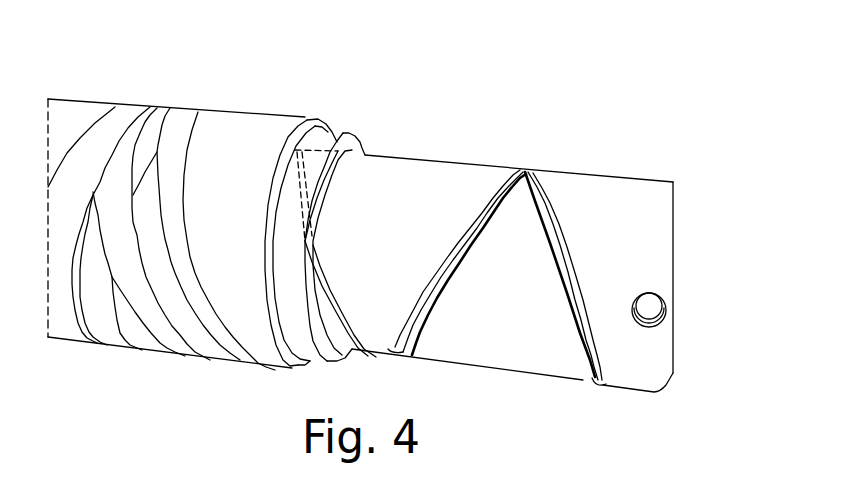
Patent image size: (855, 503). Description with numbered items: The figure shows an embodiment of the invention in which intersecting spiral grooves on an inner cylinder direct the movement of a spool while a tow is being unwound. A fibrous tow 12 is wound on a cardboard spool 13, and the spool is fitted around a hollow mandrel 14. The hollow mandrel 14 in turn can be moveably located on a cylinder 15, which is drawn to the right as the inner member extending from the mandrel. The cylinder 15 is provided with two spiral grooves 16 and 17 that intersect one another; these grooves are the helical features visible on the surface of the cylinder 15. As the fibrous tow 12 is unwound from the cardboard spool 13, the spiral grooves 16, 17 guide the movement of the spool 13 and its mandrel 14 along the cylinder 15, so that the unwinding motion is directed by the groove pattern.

The fibrous tow 12 is at (176, 186).
The cardboard spool 13 is at (194, 197).
The hollow mandrel 14 is at (344, 202).
The cylinder 15 is at (567, 273).
The spiral groove 16 is at (457, 210).
The spiral groove 17 is at (655, 278).